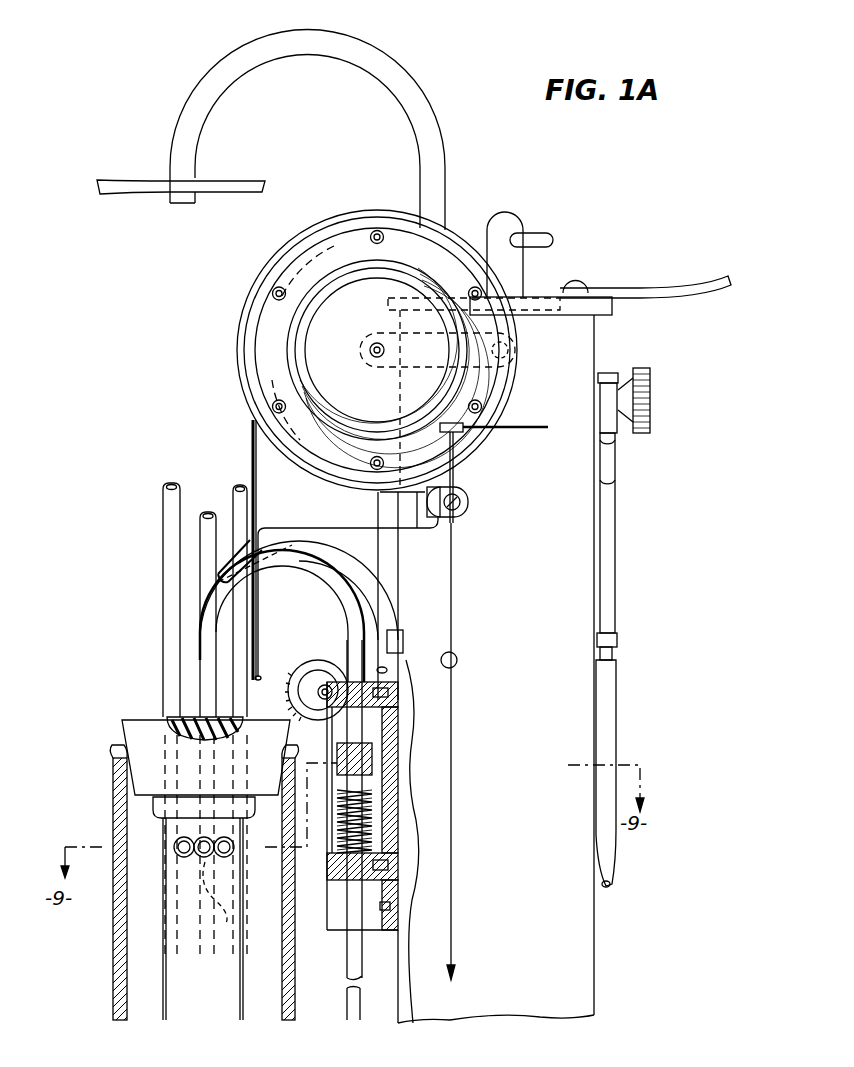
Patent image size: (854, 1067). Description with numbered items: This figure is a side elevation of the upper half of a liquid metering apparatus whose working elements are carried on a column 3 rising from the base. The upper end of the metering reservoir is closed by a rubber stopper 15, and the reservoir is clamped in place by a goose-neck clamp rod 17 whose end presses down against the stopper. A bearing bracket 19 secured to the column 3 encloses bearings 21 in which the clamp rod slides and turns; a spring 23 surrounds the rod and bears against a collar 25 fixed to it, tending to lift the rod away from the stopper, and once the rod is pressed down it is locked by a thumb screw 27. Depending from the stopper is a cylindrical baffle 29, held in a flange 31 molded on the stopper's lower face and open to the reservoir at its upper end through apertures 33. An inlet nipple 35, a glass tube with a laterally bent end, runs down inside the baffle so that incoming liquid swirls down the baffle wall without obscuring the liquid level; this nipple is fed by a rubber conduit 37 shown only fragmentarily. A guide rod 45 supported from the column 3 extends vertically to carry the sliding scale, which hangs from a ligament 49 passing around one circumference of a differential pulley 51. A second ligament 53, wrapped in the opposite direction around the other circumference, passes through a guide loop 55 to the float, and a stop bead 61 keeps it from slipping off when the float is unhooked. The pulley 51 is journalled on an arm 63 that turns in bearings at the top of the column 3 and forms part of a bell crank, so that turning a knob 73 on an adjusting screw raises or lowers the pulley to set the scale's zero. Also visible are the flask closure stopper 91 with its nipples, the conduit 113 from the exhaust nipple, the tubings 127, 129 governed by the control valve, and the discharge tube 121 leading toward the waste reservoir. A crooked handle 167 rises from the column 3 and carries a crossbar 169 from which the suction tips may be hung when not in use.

The column 3 is at (591, 938).
The stopper 15 is at (125, 719).
The goose-neck clamp rod 17 is at (614, 600).
The bearing bracket 19 is at (325, 922).
The bearings 21 is at (335, 690).
The spring 23 is at (372, 828).
The collar 25 is at (375, 765).
The thumb screw 27 is at (305, 667).
The cylindrical baffle 29 is at (240, 988).
The flange 31 is at (175, 808).
The apertures 33 is at (203, 842).
The inlet nipple 35 is at (215, 910).
The rubber conduit 37 is at (333, 538).
The guide rod 45 is at (300, 512).
The ligament 49 is at (252, 446).
The pulley 51 is at (283, 260).
The second ligament 53 is at (463, 485).
The guide loop 55 is at (522, 424).
The stop bead 61 is at (458, 660).
The arm 63 is at (440, 365).
The knob 73 is at (650, 383).
The rubber stopper 91 is at (520, 290).
The conduit 113 is at (163, 563).
The discharge tube 121 is at (616, 882).
The tubing 127 is at (200, 528).
The tubing 129 is at (240, 490).
The handle 167 is at (432, 125).
The crossbar 169 is at (165, 185).